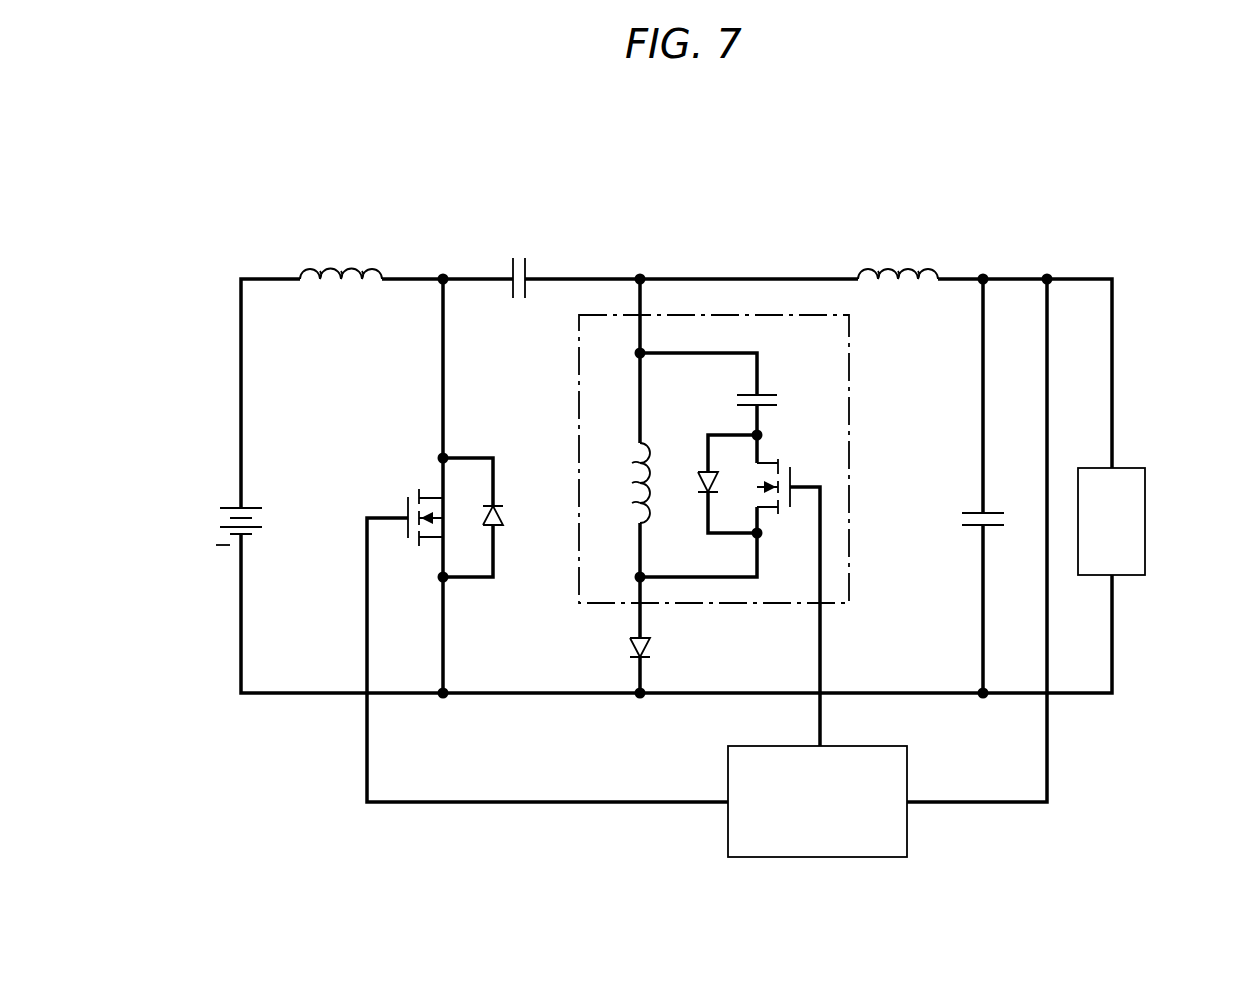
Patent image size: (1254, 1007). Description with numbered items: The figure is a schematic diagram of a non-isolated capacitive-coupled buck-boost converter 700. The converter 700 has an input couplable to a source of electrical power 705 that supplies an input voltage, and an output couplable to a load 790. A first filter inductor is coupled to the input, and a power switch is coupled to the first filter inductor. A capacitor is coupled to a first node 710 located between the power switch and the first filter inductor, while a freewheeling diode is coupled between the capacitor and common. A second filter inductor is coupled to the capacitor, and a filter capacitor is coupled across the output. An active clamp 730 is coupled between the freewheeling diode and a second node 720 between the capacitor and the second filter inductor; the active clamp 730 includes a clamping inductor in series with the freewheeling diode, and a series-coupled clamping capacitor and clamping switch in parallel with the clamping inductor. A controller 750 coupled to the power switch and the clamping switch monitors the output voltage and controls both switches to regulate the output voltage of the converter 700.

The non-isolated capacitive-coupled buck-boost converter 700 is at (757, 172).
The source of electrical power 705 is at (273, 513).
The first node 710 is at (444, 270).
The second node 720 is at (642, 270).
The active clamp 730 is at (849, 457).
The controller 750 is at (817, 857).
The load 790 is at (1145, 520).